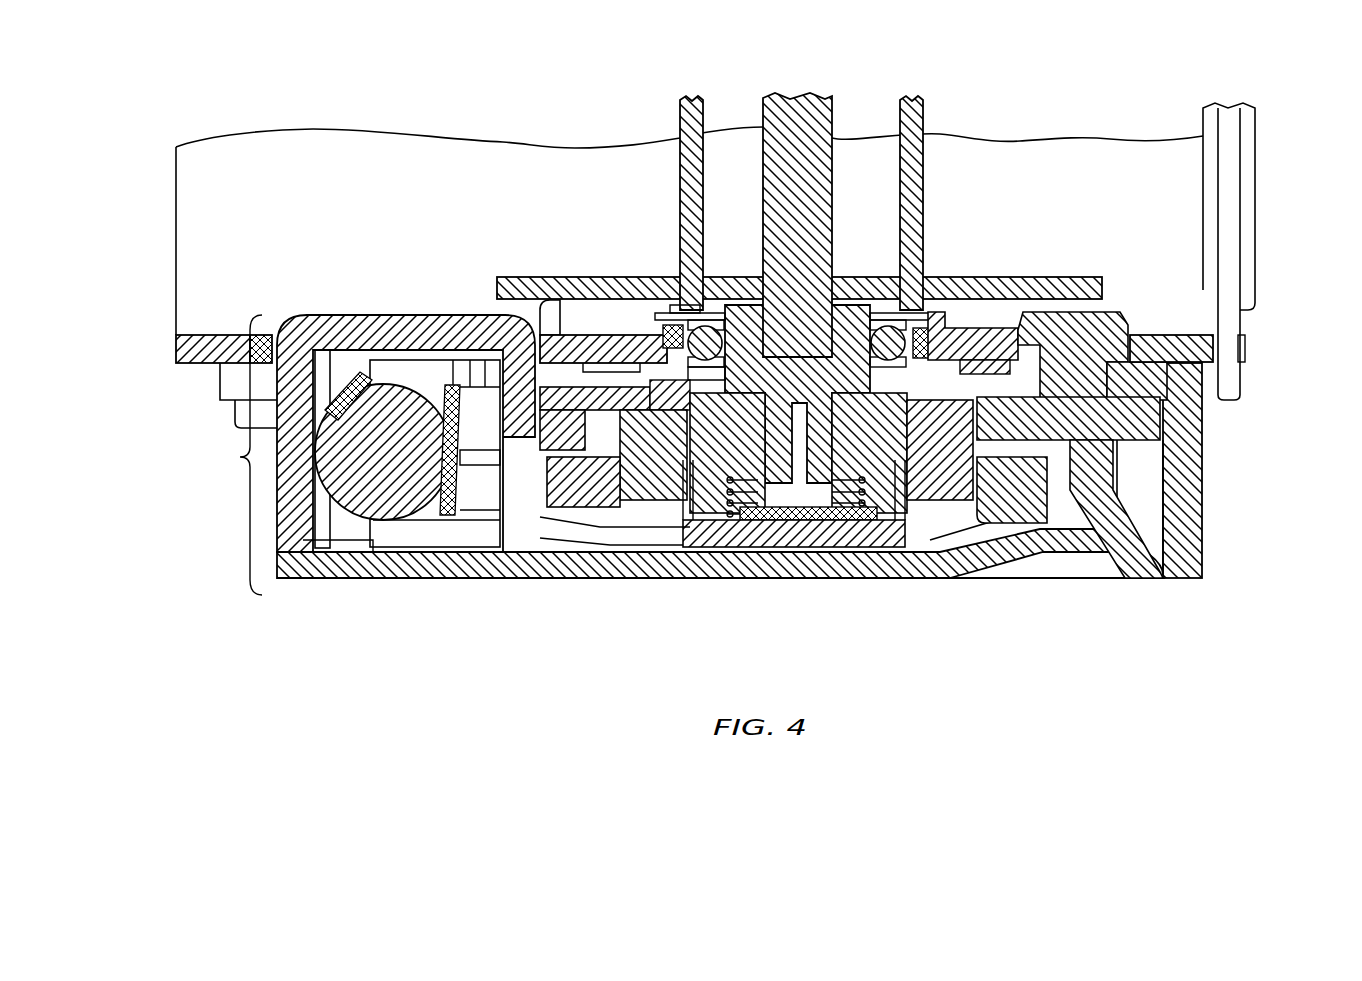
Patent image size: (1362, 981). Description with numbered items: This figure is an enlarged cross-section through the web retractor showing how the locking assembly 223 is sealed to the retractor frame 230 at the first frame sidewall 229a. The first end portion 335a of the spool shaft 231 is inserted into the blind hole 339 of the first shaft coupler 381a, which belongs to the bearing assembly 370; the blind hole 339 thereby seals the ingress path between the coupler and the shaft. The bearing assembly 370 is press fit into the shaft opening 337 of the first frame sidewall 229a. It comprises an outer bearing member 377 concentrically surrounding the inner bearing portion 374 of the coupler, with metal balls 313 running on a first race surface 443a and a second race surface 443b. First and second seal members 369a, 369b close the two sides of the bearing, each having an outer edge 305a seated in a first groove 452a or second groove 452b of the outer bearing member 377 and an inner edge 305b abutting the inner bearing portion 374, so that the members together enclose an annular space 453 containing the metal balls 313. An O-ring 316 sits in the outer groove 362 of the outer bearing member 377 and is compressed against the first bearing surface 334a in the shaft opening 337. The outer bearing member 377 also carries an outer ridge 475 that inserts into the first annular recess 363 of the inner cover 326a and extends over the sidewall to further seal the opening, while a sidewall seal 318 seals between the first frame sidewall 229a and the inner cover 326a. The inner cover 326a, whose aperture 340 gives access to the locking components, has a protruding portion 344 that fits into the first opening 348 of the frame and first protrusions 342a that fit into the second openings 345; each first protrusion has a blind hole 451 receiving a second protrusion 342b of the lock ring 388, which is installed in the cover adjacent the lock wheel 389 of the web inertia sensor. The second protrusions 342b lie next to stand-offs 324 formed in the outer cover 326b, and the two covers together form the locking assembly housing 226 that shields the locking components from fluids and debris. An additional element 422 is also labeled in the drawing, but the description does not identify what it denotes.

The locking mechanism assembly 223 is at (300, 620).
The locking assembly housing 226 is at (230, 455).
The first frame sidewall 229a is at (557, 333).
The retractor frame 230 is at (195, 335).
The spool shaft 231 is at (803, 108).
The outer edge 305a is at (688, 300).
The inner edge 305b is at (715, 320).
The metal balls 313 is at (735, 395).
The O-ring 316 is at (575, 387).
The sidewall seal 318 is at (1088, 415).
The stand-offs 324 is at (1107, 507).
The inner cover 326a is at (1200, 512).
The outer cover 326b is at (1202, 576).
The first bearing surface 334a is at (975, 360).
The first end portion 335a is at (783, 355).
The shaft opening 337 is at (997, 298).
The blind hole 339 is at (813, 315).
The aperture 340 is at (1140, 430).
The first protrusions 342a is at (1135, 302).
The second protrusions 342b is at (1185, 388).
The protruding portion 344 is at (320, 318).
The second openings 345 is at (1150, 335).
The first opening 348 is at (267, 335).
The outer groove 362 is at (668, 330).
The first annular recess 363 is at (670, 345).
The first seal member 369a is at (700, 322).
The second seal member 369b is at (692, 397).
The bearing assembly 370 is at (672, 322).
The inner bearing portion 374 is at (845, 310).
The outer bearing member 377 is at (693, 330).
The first shaft coupler 381a is at (800, 515).
The lock ring 388 is at (533, 420).
The lock wheel 389 is at (1030, 527).
The block 422 is at (1048, 330).
The first race surface 443a is at (887, 326).
The second race surface 443b is at (915, 330).
The blind hole 451 is at (1140, 325).
The first groove 452a is at (907, 310).
The second groove 452b is at (950, 342).
The annular space 453 is at (688, 305).
The outer ridge 475 is at (560, 300).